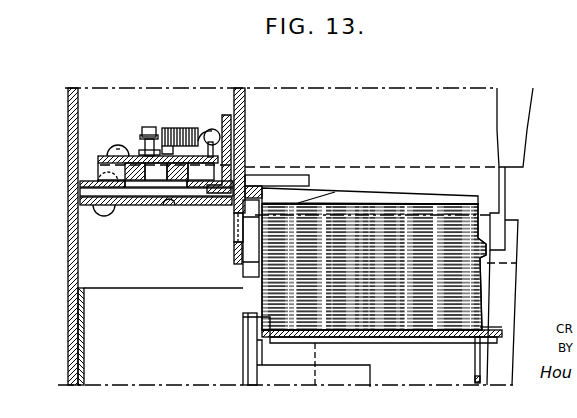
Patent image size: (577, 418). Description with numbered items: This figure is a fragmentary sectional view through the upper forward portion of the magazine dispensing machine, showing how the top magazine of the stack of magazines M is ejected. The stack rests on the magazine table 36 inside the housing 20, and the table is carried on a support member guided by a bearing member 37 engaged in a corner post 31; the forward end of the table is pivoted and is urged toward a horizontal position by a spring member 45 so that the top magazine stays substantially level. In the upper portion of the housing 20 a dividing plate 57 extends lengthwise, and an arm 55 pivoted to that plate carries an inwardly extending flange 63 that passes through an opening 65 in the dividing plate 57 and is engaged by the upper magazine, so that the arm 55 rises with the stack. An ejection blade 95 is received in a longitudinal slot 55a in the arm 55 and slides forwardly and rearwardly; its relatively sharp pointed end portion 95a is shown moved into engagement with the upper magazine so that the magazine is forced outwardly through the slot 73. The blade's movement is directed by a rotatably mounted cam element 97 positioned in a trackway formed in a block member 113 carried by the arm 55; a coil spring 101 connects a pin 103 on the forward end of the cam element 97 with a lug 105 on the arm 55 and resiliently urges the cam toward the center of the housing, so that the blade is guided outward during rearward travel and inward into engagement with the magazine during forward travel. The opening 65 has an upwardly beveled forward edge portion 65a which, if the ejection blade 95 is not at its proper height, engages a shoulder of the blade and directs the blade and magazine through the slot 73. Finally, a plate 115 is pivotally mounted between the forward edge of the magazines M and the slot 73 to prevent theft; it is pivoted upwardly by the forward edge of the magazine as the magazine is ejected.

The housing 20 is at (68, 361).
The corner post 31 is at (246, 354).
The magazine table 36 is at (468, 345).
The bearing member 37 is at (364, 386).
The spring member 45 is at (475, 371).
The arm 55 is at (246, 151).
The slot 55a is at (168, 205).
The dividing plate 57 is at (246, 118).
The flange 63 is at (298, 177).
The opening 65 is at (234, 258).
The upwardly beveled forward edge portion 65a is at (234, 222).
The slot 73 is at (515, 172).
The ejection blade 95 is at (197, 208).
The pointed end portion 95a is at (305, 200).
The cam element 97 is at (113, 150).
The coil spring 101 is at (183, 120).
The pin 103 is at (146, 127).
The lug 105 is at (213, 130).
The block member 113 is at (100, 160).
The plate 115 is at (497, 212).
The magazines M is at (428, 197).